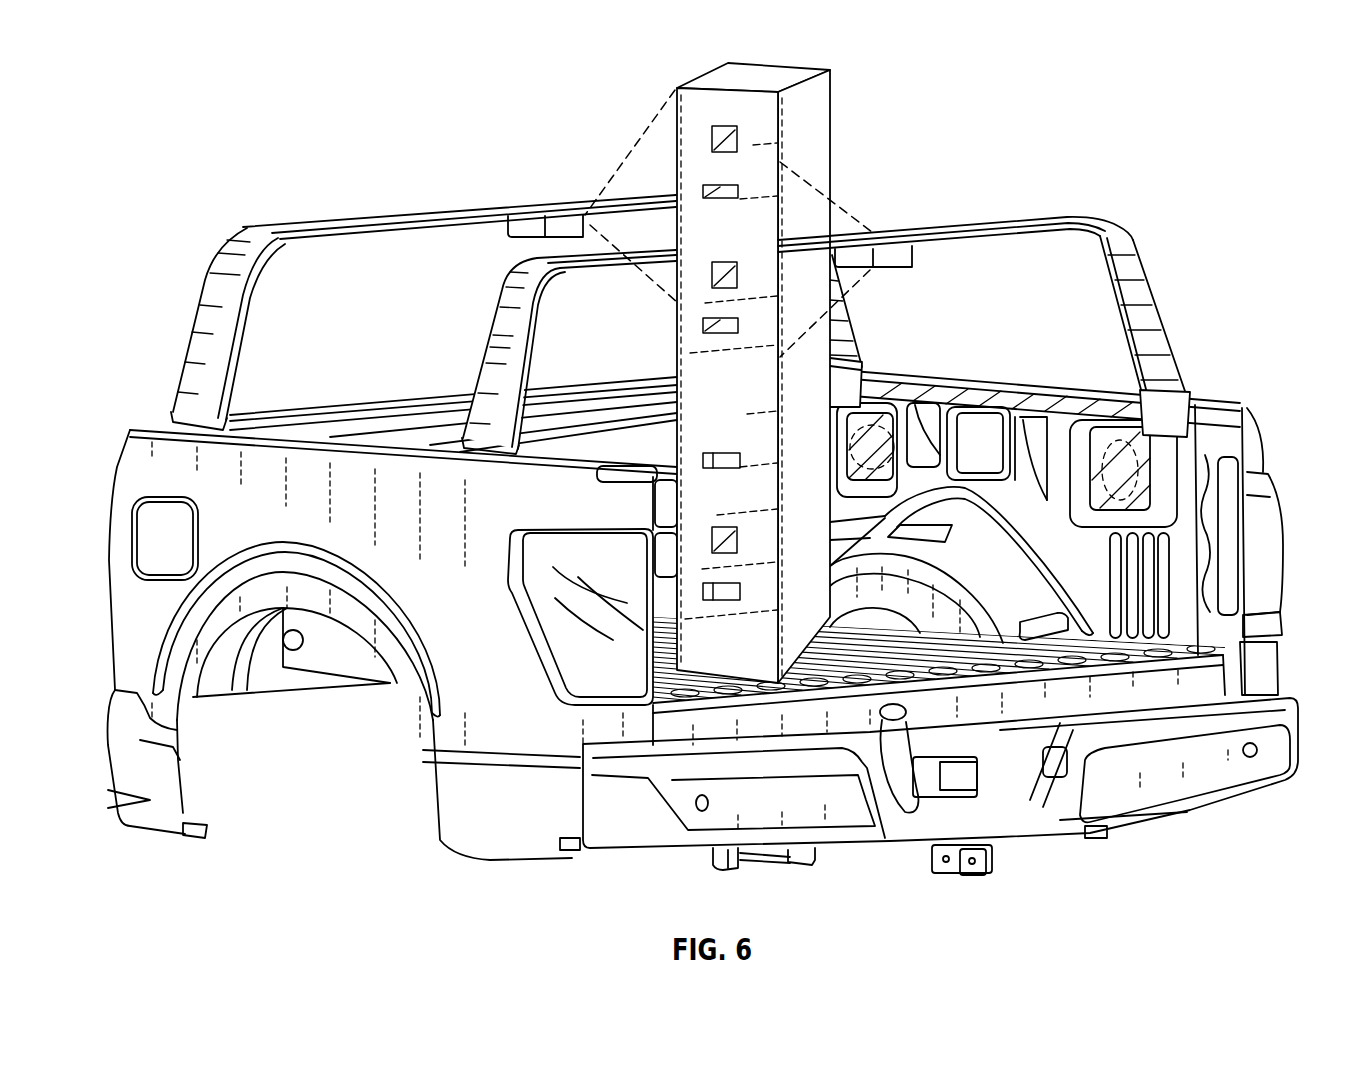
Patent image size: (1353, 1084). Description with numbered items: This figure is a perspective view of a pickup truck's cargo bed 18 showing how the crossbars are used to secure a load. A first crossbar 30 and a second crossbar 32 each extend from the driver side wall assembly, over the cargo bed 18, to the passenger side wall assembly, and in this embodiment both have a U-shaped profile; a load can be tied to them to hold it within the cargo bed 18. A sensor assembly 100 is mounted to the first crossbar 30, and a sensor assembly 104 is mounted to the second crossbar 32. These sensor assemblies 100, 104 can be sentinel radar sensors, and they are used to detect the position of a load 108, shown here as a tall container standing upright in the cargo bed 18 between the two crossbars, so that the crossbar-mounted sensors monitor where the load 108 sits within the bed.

The cargo bed 18 is at (1212, 412).
The first crossbar 30 is at (172, 318).
The second crossbar 32 is at (488, 340).
The sensor assembly 100 is at (560, 226).
The sensor assembly 104 is at (890, 258).
The load 108 is at (800, 73).